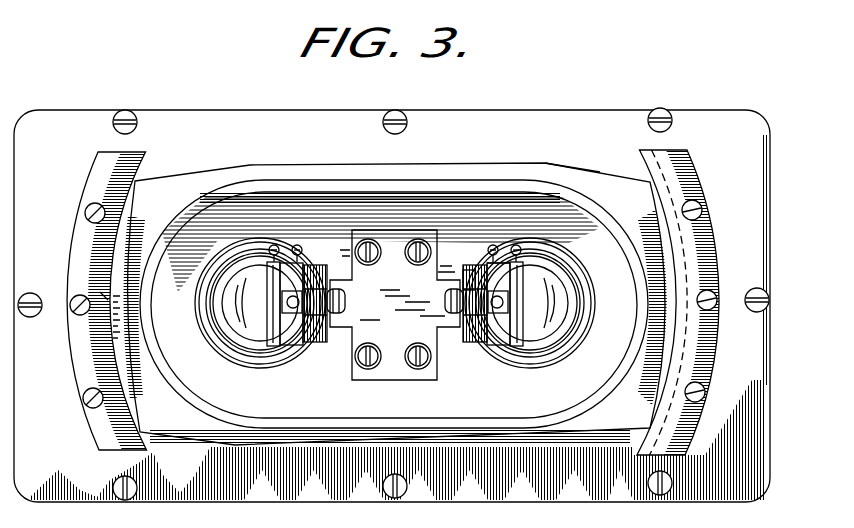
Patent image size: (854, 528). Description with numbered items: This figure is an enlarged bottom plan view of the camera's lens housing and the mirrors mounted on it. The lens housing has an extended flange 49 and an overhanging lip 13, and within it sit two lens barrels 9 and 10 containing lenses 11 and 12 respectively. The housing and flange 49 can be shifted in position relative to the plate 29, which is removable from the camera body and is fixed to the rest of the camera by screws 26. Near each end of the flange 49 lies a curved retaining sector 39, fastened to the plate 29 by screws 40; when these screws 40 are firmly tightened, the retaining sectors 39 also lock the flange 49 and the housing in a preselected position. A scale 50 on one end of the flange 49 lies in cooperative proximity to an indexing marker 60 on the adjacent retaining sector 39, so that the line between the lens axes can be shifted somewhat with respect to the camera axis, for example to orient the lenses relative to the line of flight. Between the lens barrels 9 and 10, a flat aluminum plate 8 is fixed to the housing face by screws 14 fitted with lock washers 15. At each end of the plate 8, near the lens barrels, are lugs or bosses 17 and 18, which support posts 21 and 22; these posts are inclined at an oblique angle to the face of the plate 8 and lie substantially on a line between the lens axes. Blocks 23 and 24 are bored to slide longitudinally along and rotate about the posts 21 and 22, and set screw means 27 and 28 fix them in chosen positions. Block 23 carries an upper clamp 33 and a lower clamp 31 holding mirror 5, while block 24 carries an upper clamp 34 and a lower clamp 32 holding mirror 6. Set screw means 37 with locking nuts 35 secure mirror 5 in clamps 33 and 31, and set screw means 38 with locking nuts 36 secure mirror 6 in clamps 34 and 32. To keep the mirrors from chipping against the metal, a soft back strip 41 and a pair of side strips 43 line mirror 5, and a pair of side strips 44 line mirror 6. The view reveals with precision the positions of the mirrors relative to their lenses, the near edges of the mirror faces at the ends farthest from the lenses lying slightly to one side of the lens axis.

The mirror 5 is at (222, 346).
The mirror 6 is at (560, 338).
The flat plate 8 is at (409, 232).
The lens barrel 9 is at (212, 334).
The lens barrel 10 is at (576, 328).
The lens 11 is at (242, 288).
The lens 12 is at (586, 316).
The overhanging lip 13 is at (455, 170).
The screws 14 is at (373, 243).
The lock washers 15 is at (362, 240).
The lug or boss 17 is at (343, 300).
The lug or boss 18 is at (447, 299).
The post or upright 21 is at (288, 303).
The post or upright 22 is at (502, 303).
The block 23 is at (282, 285).
The block 24 is at (463, 283).
The screws 26 is at (133, 115).
The set screw means 27 is at (314, 272).
The set screw means 28 is at (484, 266).
The plate 29 is at (481, 110).
The lower clamp 31 is at (212, 273).
The lower clamp 32 is at (506, 352).
The upper clamp 33 is at (276, 348).
The upper clamp 34 is at (478, 346).
The locking nuts 35 is at (272, 245).
The locking nuts 36 is at (519, 246).
The set screw means 37 is at (296, 245).
The set screw means 38 is at (515, 245).
The curved retaining sector 39 is at (96, 166).
The screws 40 is at (85, 210).
The back strip 41 is at (236, 352).
The side strips 43 is at (246, 260).
The side strips 44 is at (525, 352).
The flange 49 is at (560, 168).
The scale 50 is at (121, 340).
The indicating or indexing marker 60 is at (100, 292).